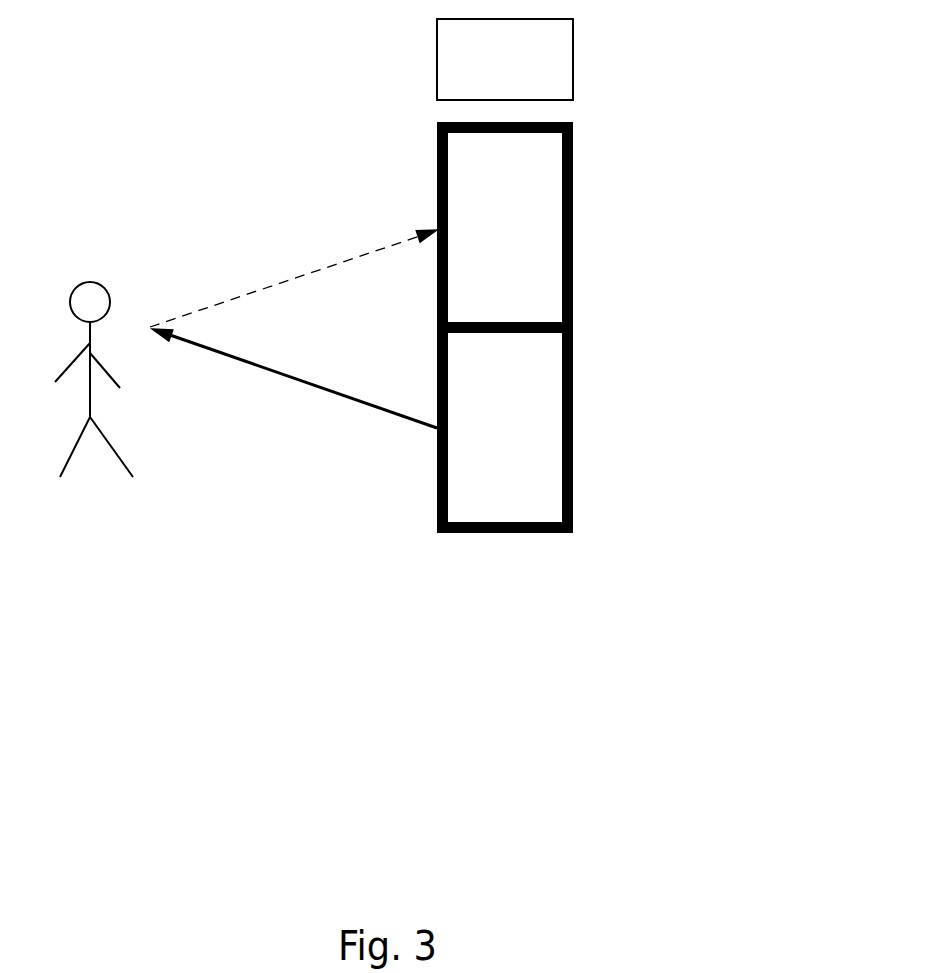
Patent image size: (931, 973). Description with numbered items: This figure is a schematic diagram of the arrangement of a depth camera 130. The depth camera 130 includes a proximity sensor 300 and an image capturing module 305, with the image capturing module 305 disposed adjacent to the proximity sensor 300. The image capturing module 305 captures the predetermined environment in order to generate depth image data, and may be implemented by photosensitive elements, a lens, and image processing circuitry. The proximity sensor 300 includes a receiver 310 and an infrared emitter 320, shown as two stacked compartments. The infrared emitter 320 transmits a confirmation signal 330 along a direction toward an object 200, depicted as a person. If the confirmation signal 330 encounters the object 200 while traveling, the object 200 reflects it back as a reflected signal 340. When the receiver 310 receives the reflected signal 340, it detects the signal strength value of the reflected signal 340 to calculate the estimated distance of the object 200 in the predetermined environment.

The depth camera 130 is at (767, 18).
The object 200 is at (90, 282).
The proximity sensor 300 is at (683, 188).
The image capturing module 305 is at (573, 61).
The receiver 310 is at (538, 225).
The infrared emitter 320 is at (538, 418).
The confirmation signal 330 is at (305, 382).
The reflected signal 340 is at (290, 280).